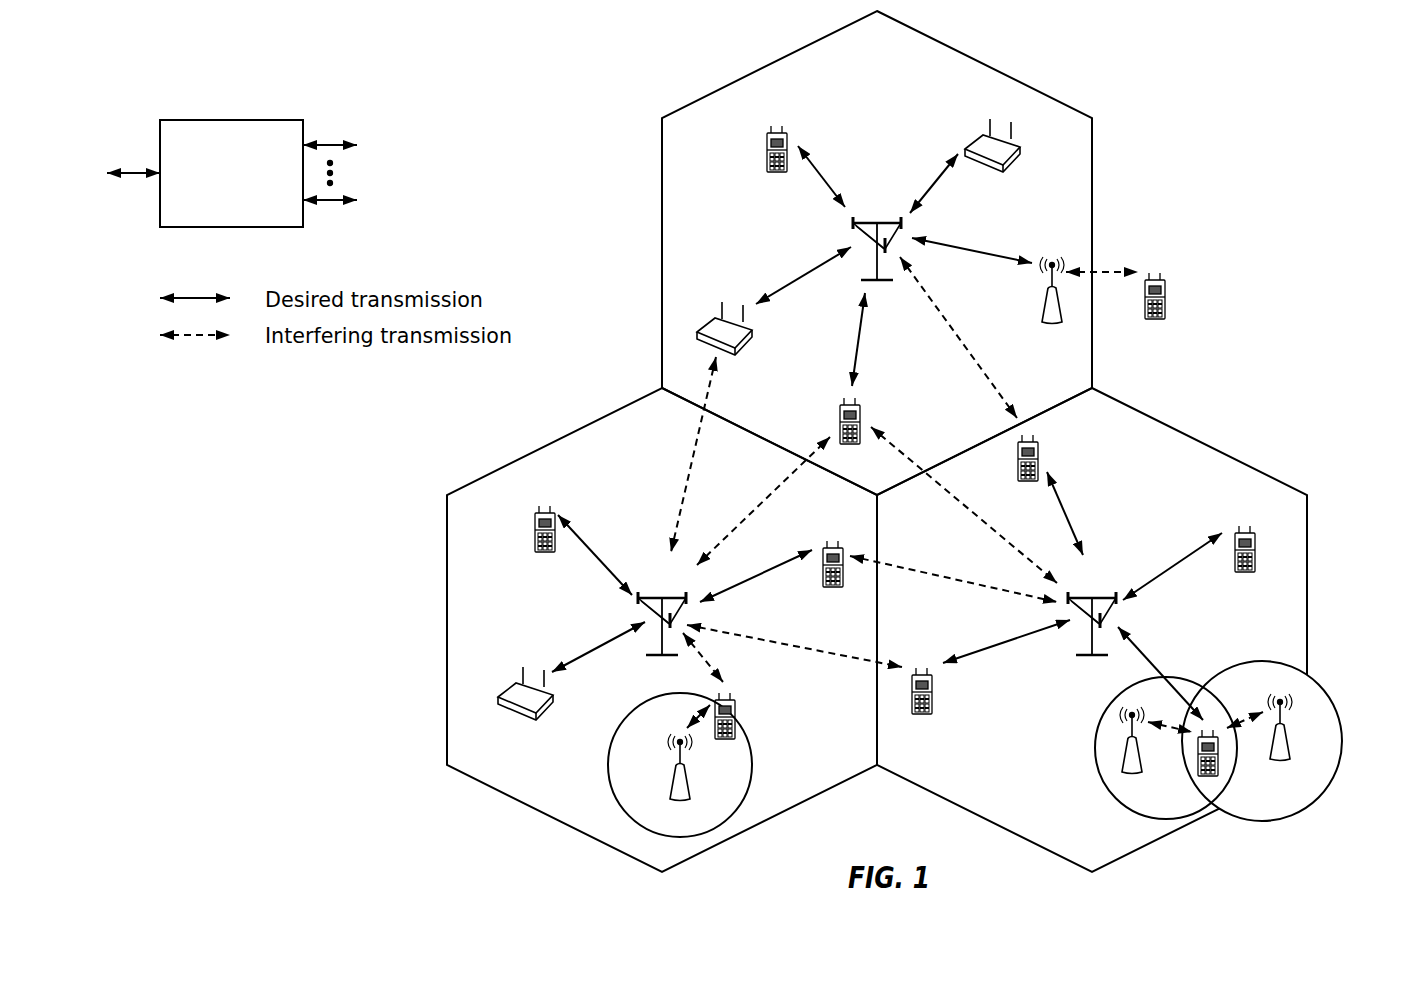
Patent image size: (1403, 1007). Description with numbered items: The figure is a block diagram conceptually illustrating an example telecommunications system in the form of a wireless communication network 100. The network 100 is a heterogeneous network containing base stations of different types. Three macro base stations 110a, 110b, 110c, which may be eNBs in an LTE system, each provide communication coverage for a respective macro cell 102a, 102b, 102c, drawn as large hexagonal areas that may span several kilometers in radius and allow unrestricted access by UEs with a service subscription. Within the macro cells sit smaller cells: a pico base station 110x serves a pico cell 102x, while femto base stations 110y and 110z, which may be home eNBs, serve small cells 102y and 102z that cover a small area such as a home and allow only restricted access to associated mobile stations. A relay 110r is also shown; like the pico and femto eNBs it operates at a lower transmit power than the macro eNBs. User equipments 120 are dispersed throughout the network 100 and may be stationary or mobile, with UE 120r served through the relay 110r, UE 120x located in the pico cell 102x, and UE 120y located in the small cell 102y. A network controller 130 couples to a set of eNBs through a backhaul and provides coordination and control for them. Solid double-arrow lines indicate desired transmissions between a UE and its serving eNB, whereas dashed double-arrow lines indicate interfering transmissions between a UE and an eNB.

The wireless communication network 100 is at (1237, 82).
The macro cell 102a is at (983, 63).
The macro cell 102b is at (553, 441).
The macro cell 102c is at (1200, 440).
The pico cell 102x is at (630, 710).
The small cell 102y is at (1098, 713).
The small cell 102z is at (1258, 658).
The macro base station 110a is at (872, 222).
The macro base station 110b is at (656, 597).
The macro base station 110c is at (1088, 597).
The relay 110r is at (1043, 306).
The pico base station 110x is at (688, 790).
The femto base station 110y is at (1142, 768).
The femto base station 110z is at (1289, 750).
The user equipment 120 is at (767, 146).
The user equipment 120r is at (1165, 303).
The user equipment 120x is at (735, 714).
The user equipment 120y is at (1196, 770).
The network controller 130 is at (228, 120).